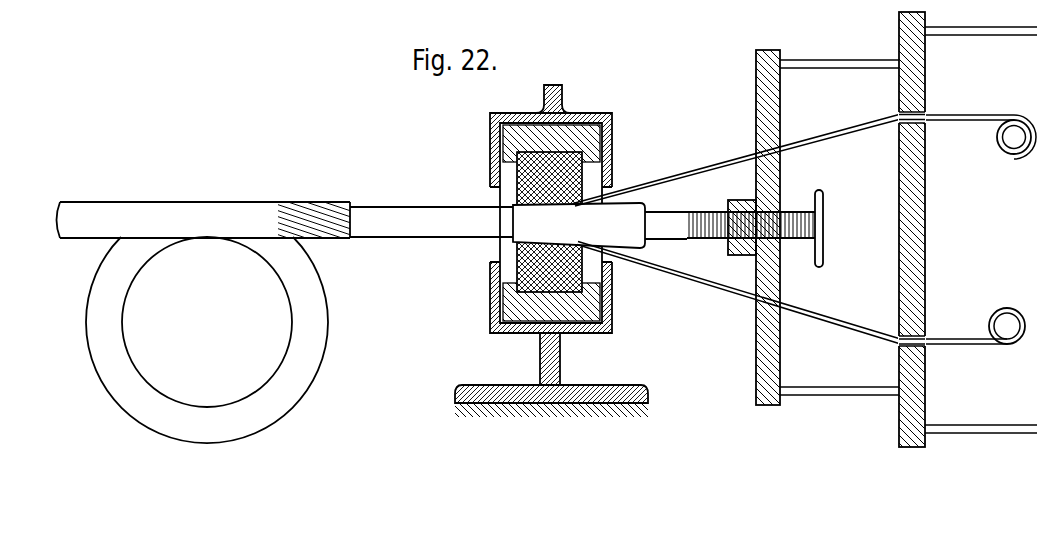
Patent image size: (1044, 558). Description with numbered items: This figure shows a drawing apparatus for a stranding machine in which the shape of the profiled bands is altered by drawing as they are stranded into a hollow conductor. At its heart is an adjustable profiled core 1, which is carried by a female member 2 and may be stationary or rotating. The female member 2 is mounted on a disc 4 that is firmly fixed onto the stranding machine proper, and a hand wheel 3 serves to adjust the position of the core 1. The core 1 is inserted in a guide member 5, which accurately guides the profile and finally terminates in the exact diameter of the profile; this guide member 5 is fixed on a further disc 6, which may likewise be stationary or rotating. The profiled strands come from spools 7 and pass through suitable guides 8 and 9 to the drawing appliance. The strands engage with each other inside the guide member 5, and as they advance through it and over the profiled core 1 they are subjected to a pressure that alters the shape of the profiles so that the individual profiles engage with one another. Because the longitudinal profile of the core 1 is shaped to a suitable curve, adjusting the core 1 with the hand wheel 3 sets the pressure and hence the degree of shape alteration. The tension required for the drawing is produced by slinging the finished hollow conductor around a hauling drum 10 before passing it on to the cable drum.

The profiled core 1 is at (582, 225).
The female member 2 is at (742, 193).
The hand wheel 3 is at (830, 228).
The disc 4 is at (780, 178).
The guide member 5 is at (549, 222).
The disc 6 is at (551, 223).
The spool 7 is at (1014, 137).
The guide 8 is at (908, 114).
The guide 9 is at (804, 230).
The hauling drum 10 is at (209, 313).